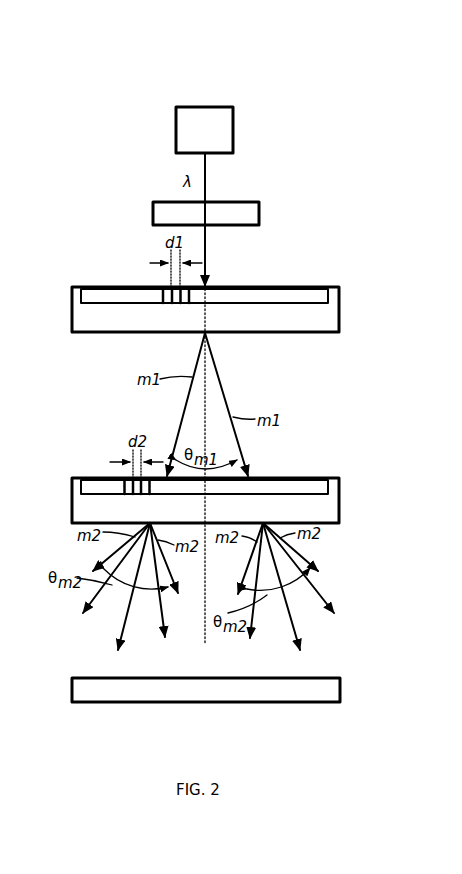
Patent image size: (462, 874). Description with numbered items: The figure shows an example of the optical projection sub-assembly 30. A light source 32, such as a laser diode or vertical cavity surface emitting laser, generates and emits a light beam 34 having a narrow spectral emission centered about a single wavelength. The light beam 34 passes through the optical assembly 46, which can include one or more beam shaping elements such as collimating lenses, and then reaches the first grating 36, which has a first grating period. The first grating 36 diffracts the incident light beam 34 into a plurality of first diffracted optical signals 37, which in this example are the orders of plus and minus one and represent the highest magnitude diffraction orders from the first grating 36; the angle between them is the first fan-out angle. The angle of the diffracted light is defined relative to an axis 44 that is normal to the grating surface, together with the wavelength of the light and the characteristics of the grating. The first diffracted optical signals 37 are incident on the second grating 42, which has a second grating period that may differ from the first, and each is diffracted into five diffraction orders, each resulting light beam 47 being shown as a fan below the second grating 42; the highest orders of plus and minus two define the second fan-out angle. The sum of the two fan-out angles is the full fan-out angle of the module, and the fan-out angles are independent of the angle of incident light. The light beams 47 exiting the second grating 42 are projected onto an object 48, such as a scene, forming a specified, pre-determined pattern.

The optical projection sub-assembly 30 is at (398, 51).
The light source 32 is at (233, 121).
The light beam 34 is at (205, 168).
The optical assembly 46 is at (259, 214).
The first grating 36 is at (339, 310).
The axis 44 is at (205, 387).
The first diffracted optical signals 37 is at (180, 410).
The second grating 42 is at (339, 505).
The light beams 47 is at (108, 558).
The object 48 is at (340, 682).